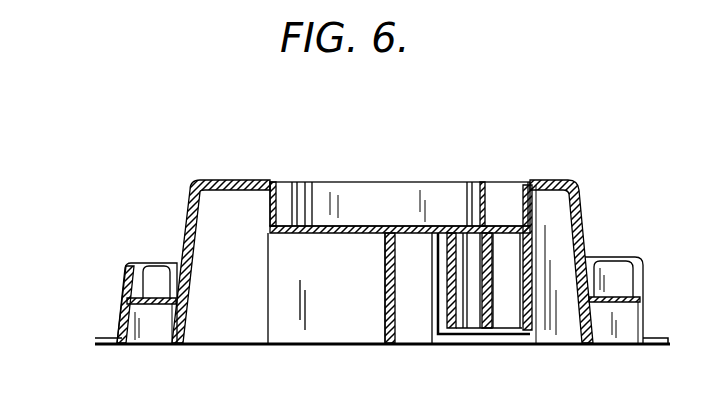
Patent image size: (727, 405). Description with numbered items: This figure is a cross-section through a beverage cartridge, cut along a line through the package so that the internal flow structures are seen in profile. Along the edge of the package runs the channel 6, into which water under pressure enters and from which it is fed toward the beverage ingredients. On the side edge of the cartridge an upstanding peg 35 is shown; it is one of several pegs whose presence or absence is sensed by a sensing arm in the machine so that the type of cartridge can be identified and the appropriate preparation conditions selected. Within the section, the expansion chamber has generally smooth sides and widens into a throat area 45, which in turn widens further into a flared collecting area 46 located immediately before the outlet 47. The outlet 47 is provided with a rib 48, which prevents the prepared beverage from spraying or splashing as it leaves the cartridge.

The peg 35 is at (152, 281).
The throat area 45 is at (283, 197).
The flared collecting area 46 is at (367, 187).
The outlet 47 is at (467, 248).
The rib 48 is at (492, 307).
The channel 6 is at (610, 338).